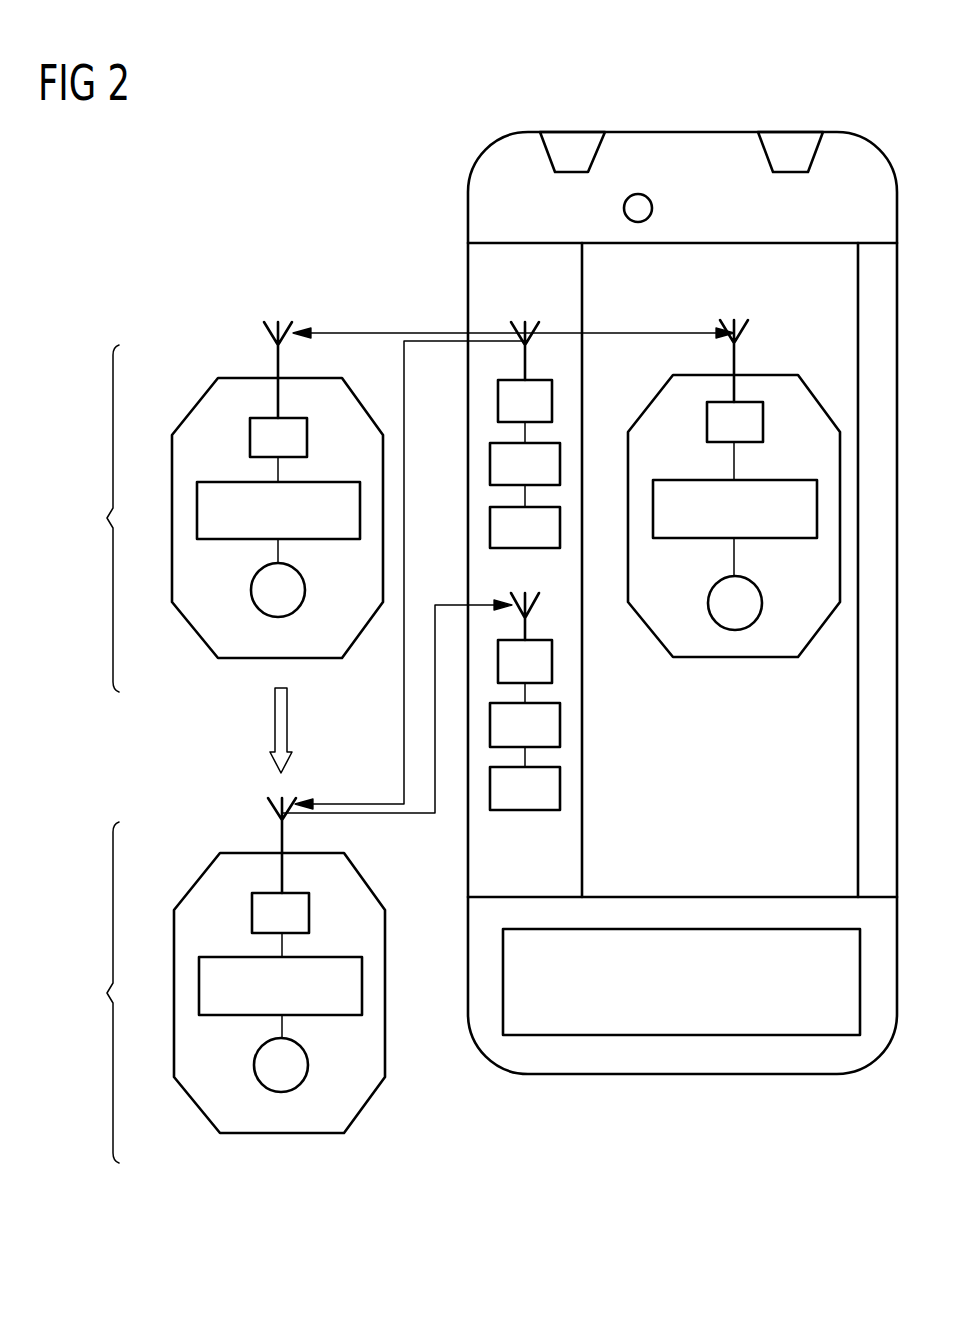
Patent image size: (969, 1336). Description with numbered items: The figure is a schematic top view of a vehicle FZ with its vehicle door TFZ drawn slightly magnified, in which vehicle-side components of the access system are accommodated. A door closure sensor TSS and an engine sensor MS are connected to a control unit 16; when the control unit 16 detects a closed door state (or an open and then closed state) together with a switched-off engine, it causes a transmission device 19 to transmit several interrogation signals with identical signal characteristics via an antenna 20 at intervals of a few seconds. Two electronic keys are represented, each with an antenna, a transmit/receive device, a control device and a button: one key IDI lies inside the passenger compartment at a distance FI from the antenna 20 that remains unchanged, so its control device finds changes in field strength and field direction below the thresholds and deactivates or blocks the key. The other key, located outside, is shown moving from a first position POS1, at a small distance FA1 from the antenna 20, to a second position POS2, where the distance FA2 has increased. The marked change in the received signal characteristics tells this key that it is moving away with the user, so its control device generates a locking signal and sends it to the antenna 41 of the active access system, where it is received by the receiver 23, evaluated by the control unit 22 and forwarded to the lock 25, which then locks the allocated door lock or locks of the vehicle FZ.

The vehicle FZ is at (687, 131).
The vehicle door TFZ is at (525, 250).
The engine sensor MS is at (652, 208).
The antenna 20 is at (521, 321).
The transmission device 19 is at (552, 400).
The control unit 16 is at (560, 465).
The door closure sensor TSS is at (525, 527).
The antenna 41 is at (515, 598).
The receiver 23 is at (552, 663).
The control unit 22 is at (560, 727).
The lock 25 is at (525, 811).
The distance FA1 is at (409, 317).
The distance FA2 is at (403, 577).
The distance FI is at (629, 316).
The electronic key IDI is at (735, 658).
The first position POS1 is at (78, 518).
The second position POS2 is at (78, 992).